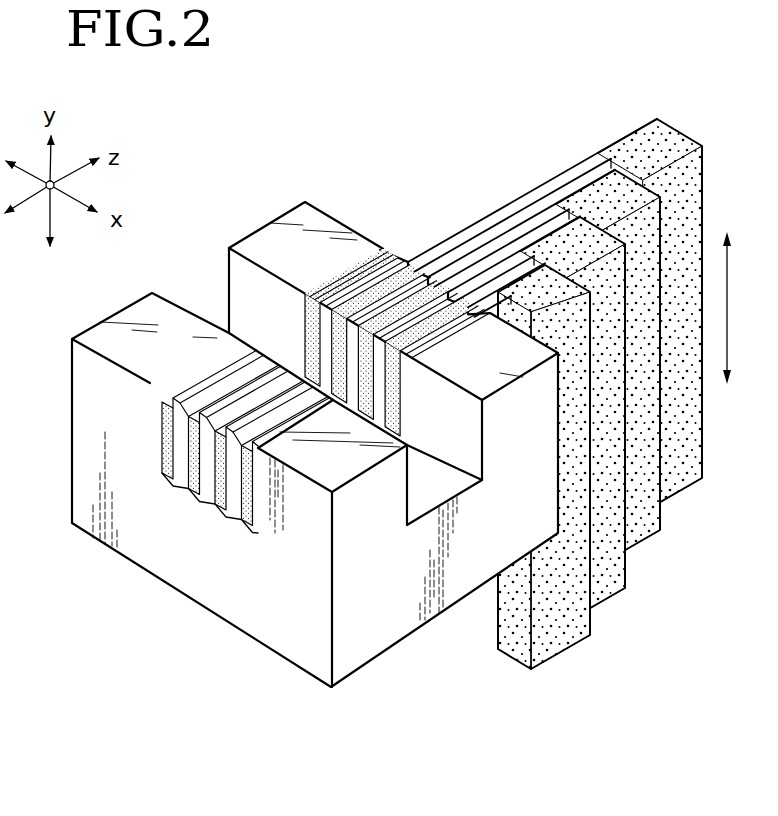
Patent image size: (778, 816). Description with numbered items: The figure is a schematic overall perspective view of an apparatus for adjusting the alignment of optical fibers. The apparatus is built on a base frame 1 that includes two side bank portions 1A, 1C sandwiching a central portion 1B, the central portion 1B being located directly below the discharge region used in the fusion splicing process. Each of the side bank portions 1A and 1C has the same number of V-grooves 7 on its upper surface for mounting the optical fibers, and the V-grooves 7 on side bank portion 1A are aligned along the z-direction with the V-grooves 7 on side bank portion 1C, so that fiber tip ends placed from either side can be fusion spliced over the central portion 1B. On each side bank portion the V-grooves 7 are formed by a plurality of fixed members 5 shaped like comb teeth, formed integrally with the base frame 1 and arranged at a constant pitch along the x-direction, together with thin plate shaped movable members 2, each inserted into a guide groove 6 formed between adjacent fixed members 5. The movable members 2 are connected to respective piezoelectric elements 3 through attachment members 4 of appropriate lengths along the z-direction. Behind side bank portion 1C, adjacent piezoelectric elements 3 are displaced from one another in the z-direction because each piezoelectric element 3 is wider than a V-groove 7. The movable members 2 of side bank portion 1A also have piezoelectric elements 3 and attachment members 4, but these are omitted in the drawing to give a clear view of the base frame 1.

The base frame 1 is at (232, 630).
The side bank portion 1A is at (387, 536).
The central portion 1B is at (440, 610).
The side bank portion 1C is at (545, 458).
The movable member 2 is at (303, 327).
The piezoelectric element 3 is at (683, 474).
The attachment member 4 is at (513, 300).
The fixed member 5 is at (307, 325).
The guide groove 6 is at (167, 481).
The V-groove 7 is at (377, 263).